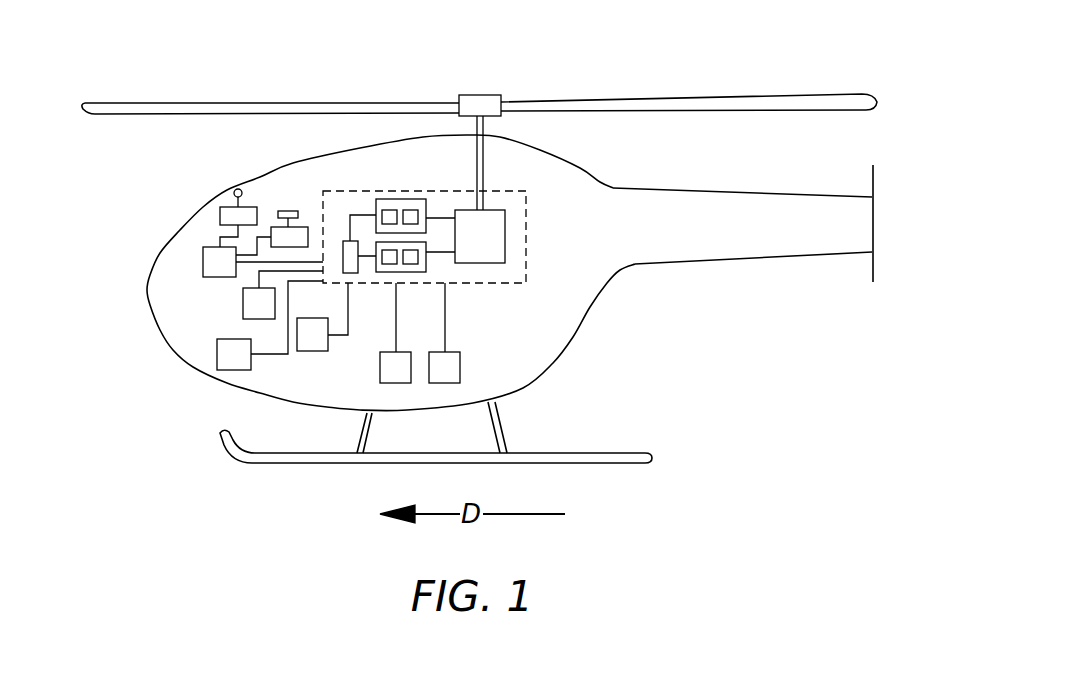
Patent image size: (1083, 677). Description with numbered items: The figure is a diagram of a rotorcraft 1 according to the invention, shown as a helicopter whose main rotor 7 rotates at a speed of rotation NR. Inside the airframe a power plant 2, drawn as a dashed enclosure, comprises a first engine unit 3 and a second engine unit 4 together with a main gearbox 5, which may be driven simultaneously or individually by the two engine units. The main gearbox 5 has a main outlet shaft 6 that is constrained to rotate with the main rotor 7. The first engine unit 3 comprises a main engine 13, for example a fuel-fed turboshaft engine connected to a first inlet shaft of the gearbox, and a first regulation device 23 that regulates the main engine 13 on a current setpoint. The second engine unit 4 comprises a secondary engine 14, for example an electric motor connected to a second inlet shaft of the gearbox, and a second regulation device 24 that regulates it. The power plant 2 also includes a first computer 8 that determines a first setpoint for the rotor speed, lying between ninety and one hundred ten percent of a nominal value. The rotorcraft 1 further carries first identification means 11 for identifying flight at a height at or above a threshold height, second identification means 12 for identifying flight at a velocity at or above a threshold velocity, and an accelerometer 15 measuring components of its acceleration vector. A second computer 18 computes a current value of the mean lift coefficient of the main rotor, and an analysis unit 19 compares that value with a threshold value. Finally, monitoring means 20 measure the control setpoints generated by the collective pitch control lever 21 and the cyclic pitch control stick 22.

The rotorcraft 1 is at (135, 226).
The power plant 2 is at (525, 314).
The first engine unit 3 is at (377, 200).
The second engine unit 4 is at (426, 266).
The main gearbox 5 is at (505, 223).
The main outlet shaft 6 is at (488, 168).
The main rotor 7 is at (660, 90).
The first computer 8 is at (350, 241).
The first identification means 11 is at (243, 308).
The second identification means 12 is at (318, 351).
The main engine 13 is at (387, 210).
The secondary engine 14 is at (387, 272).
The accelerometer 15 is at (217, 360).
The second computer 18 is at (400, 383).
The analysis unit 19 is at (445, 383).
The monitoring means 20 is at (203, 268).
The collective pitch control lever 21 is at (220, 213).
The cyclic pitch control stick 22 is at (277, 227).
The first regulation device 23 is at (412, 210).
The second regulation device 24 is at (413, 272).